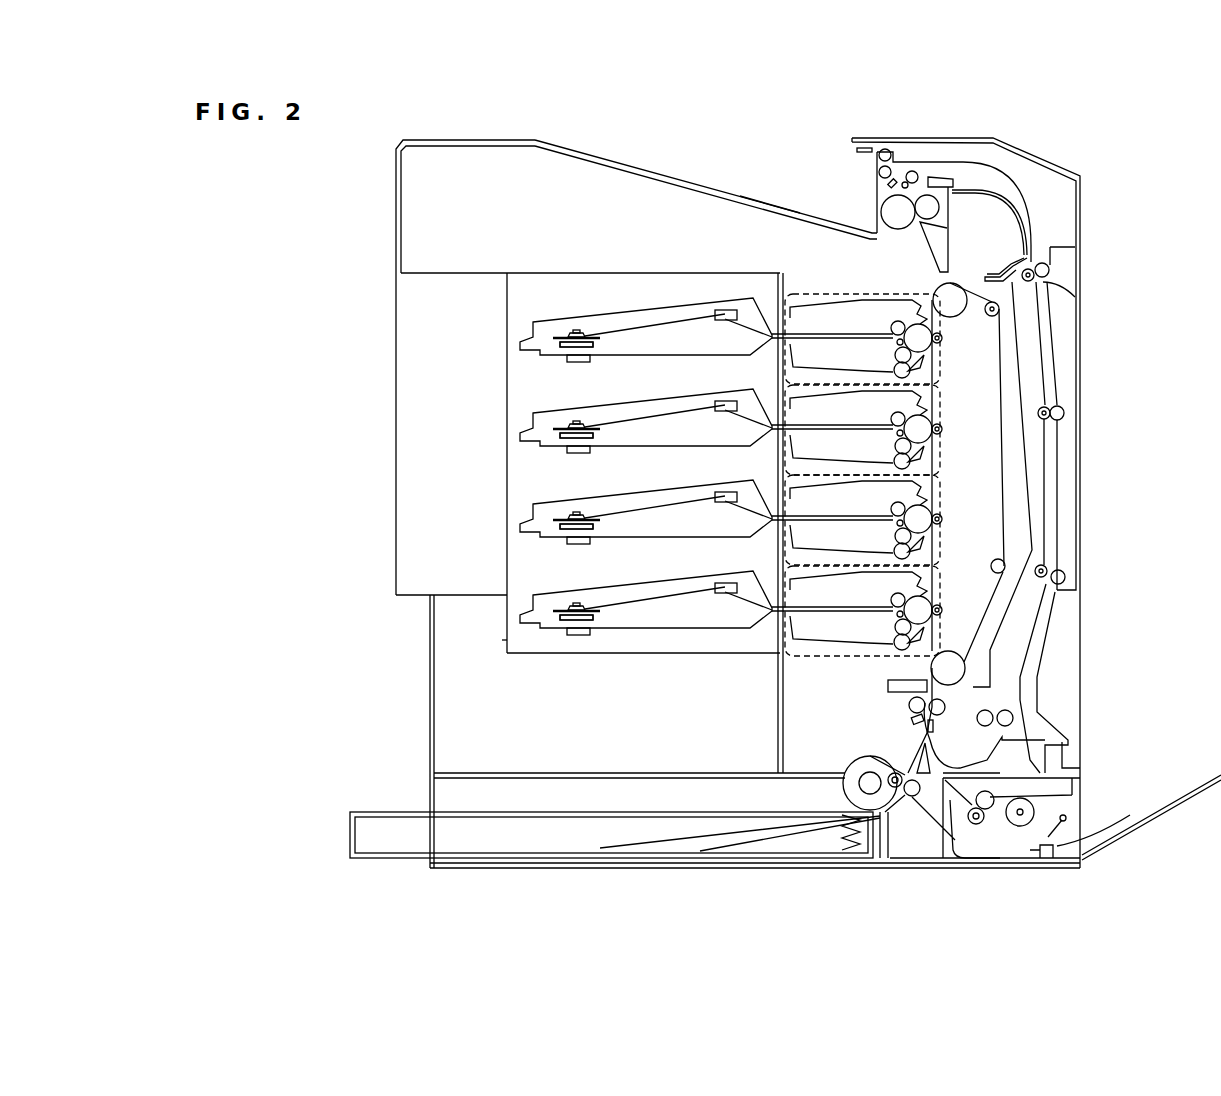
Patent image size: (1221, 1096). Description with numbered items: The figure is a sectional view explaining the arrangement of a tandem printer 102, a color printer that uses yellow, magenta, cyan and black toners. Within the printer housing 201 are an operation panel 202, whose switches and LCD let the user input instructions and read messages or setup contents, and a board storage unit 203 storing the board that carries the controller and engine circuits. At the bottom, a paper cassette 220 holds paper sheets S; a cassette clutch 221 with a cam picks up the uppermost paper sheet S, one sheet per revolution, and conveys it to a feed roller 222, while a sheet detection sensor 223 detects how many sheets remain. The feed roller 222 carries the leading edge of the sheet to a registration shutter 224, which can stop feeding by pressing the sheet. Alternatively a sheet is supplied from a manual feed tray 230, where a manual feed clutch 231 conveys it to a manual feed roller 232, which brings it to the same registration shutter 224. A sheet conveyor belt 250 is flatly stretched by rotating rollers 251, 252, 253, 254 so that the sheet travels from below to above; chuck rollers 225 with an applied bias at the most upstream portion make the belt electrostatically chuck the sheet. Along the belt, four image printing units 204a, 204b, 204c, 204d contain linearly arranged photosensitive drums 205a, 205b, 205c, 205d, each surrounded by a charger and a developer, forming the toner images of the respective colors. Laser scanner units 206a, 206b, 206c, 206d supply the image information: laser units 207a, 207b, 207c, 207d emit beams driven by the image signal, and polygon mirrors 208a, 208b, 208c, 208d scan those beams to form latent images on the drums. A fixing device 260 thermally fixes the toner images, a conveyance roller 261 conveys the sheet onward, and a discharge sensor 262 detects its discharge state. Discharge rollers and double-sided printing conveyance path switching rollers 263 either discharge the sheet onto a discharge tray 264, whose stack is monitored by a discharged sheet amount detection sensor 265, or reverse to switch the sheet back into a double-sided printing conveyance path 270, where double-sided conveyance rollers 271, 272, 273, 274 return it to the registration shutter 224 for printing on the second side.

The tandem printer 102 is at (448, 160).
The printer housing 201 is at (536, 139).
The operation panel 202 is at (1068, 134).
The board storage unit 203 is at (478, 773).
The discharge tray 264 is at (760, 193).
The fixing device 260 is at (898, 218).
The conveyance roller 261 is at (914, 171).
The discharge sensor 262 is at (880, 180).
The discharge rollers & double-sided printing conveyance path switching rollers 263 is at (886, 149).
The discharged sheet amount detection sensor 265 is at (862, 146).
The double-sided conveyance roller 271 is at (1036, 278).
The double-sided conveyance roller 272 is at (1050, 410).
The double-sided conveyance roller 273 is at (1045, 566).
The double-sided conveyance roller 274 is at (1010, 715).
The double-sided printing conveyance path 270 is at (1058, 455).
The sheet conveyor belt 250 is at (998, 500).
The rotating roller 251 is at (960, 600).
The rotating roller 252 is at (942, 526).
The rotating roller 253 is at (942, 436).
The rotating roller 254 is at (942, 345).
The image printing unit 204a is at (785, 572).
The image printing unit 204b is at (785, 482).
The image printing unit 204c is at (785, 392).
The image printing unit 204d is at (785, 292).
The photosensitive drum 205a is at (900, 598).
The photosensitive drum 205b is at (900, 507).
The photosensitive drum 205c is at (900, 417).
The photosensitive drum 205d is at (900, 326).
The laser scanner unit 206a is at (533, 599).
The laser scanner unit 206b is at (533, 508).
The laser scanner unit 206c is at (533, 417).
The laser scanner unit 206d is at (533, 326).
The laser unit 207a is at (716, 583).
The laser unit 207b is at (716, 492).
The laser unit 207c is at (716, 401).
The laser unit 207d is at (716, 310).
The polygon mirror 208a is at (580, 609).
The polygon mirror 208b is at (580, 518).
The polygon mirror 208c is at (580, 427).
The polygon mirror 208d is at (580, 336).
The paper cassette 220 is at (497, 830).
The paper sheet S is at (650, 848).
The cassette clutch 221 is at (858, 758).
The feed roller 222 is at (912, 797).
The sheet detection sensor 223 is at (865, 820).
The registration shutter 224 is at (888, 688).
The chuck rollers 225 is at (913, 706).
The manual feed tray 230 is at (1188, 790).
The manual feed clutch 231 is at (1035, 812).
The manual feed roller 232 is at (977, 825).